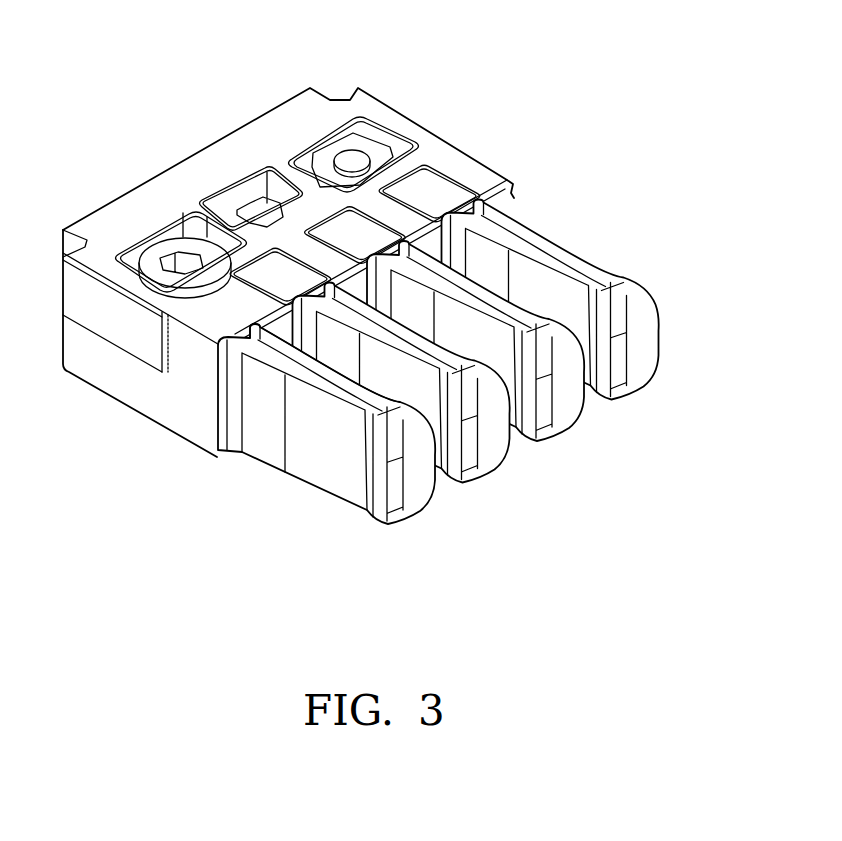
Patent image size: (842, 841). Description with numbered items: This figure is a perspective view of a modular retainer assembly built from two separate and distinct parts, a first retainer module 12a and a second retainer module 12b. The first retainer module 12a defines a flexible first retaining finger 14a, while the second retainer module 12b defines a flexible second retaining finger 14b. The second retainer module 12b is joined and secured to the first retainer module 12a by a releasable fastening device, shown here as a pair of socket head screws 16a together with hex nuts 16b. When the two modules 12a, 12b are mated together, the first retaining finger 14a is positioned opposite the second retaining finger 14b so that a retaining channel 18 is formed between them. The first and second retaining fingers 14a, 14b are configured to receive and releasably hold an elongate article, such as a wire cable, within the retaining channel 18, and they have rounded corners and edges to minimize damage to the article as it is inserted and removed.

The first retainer module 12a is at (98, 372).
The second retainer module 12b is at (452, 157).
The first retaining finger 14a is at (308, 464).
The second retaining finger 14b is at (420, 463).
The socket head screws 16a is at (165, 250).
The hex nuts 16b is at (366, 150).
The retaining channel 18 is at (297, 353).